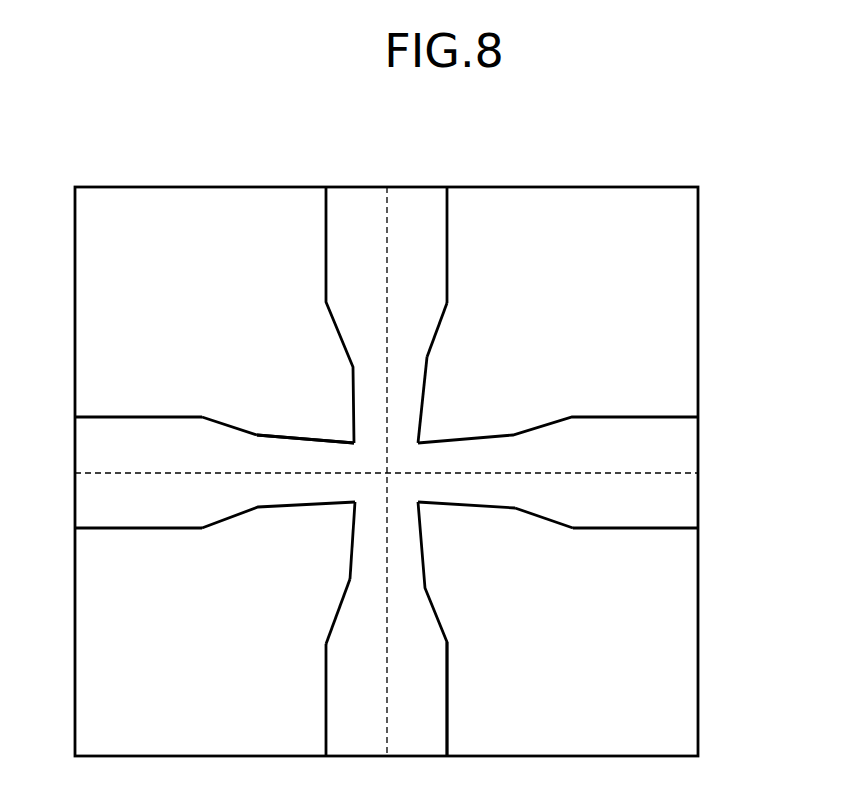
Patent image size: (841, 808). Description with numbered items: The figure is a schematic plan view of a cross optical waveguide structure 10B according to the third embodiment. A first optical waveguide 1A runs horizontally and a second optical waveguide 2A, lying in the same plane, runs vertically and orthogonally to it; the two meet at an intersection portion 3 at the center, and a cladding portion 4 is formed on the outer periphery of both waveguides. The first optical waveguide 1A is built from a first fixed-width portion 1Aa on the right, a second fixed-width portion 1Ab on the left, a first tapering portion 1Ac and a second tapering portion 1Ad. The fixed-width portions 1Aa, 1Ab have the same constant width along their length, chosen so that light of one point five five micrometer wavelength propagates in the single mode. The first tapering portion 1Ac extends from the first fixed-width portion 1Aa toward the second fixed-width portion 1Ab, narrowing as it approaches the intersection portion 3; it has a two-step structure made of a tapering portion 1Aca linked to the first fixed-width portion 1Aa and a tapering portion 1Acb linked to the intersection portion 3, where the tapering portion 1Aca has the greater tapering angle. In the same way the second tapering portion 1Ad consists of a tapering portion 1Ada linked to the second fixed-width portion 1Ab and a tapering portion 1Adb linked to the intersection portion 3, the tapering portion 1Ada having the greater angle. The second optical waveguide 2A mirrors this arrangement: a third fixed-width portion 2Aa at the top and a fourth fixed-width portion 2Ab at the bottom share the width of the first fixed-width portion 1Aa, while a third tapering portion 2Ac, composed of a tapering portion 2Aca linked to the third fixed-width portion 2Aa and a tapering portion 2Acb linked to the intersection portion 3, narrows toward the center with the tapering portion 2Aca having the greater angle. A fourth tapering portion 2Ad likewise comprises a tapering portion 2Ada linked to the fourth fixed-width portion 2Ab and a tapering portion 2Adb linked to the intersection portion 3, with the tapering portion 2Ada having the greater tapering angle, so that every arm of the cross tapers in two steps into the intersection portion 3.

The cross optical waveguide structure 10B is at (716, 150).
The cladding portion 4 is at (698, 200).
The intersection portion 3 is at (347, 430).
The first optical waveguide 1A is at (613, 552).
The first fixed-width portion 1Aa is at (656, 529).
The second fixed-width portion 1Ab is at (112, 529).
The first tapering portion 1Ac is at (437, 588).
The tapering portion 1Aca is at (543, 517).
The tapering portion 1Acb is at (467, 507).
The second tapering portion 1Ad is at (128, 333).
The tapering portion 1Ada is at (222, 420).
The tapering portion 1Adb is at (293, 437).
The second optical waveguide 2A is at (514, 257).
The third fixed-width portion 2Aa is at (447, 222).
The fourth fixed-width portion 2Ab is at (447, 728).
The third tapering portion 2Ac is at (553, 312).
The tapering portion 2Aca is at (438, 330).
The tapering portion 2Acb is at (428, 372).
The fourth tapering portion 2Ad is at (225, 558).
The tapering portion 2Ada is at (337, 613).
The tapering portion 2Adb is at (348, 575).